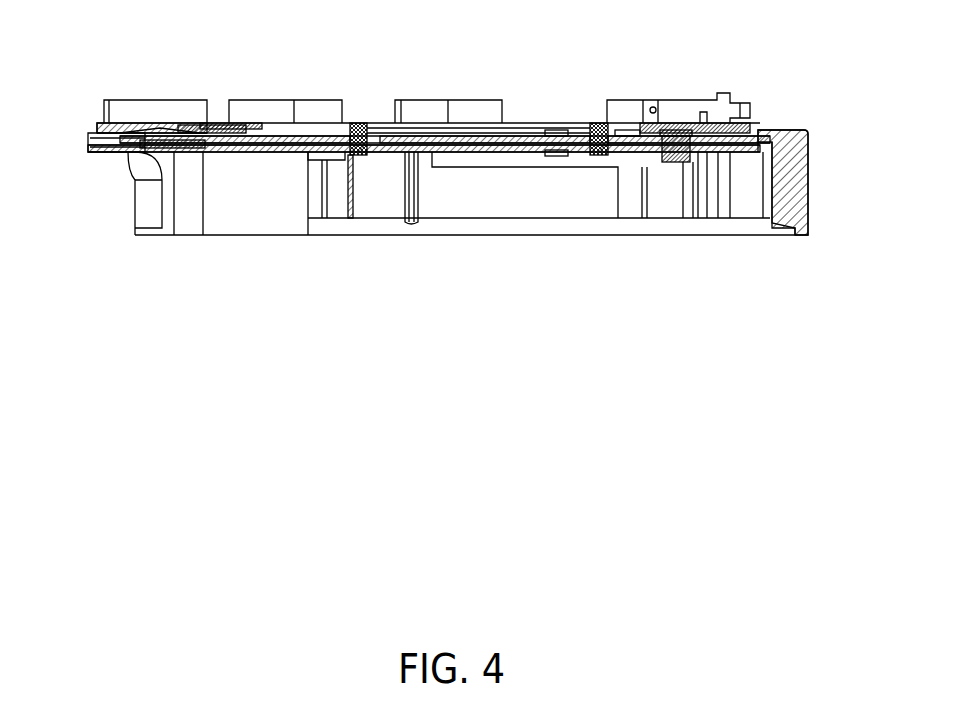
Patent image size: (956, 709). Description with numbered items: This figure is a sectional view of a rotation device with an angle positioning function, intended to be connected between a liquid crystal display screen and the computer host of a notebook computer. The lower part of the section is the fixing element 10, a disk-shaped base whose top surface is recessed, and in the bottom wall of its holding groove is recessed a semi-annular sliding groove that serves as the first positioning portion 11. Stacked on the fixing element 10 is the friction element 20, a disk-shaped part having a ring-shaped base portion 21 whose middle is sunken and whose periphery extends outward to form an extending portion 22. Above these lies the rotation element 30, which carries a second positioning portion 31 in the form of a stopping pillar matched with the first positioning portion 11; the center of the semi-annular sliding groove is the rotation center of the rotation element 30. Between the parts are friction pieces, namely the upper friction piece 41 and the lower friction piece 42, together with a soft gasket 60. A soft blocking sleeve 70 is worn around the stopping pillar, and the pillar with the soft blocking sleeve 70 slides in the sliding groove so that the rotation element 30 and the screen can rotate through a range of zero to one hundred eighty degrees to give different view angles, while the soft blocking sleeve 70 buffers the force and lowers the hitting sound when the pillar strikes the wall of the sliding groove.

The fixing element 10 is at (805, 148).
The first positioning portion 11 is at (678, 162).
The friction element 20 is at (647, 125).
The base portion 21 is at (307, 130).
The extending portion 22 is at (213, 127).
The rotation element 30 is at (107, 124).
The second positioning portion 31 is at (675, 130).
The upper friction piece 41 is at (192, 125).
The lower friction piece 42 is at (140, 138).
The soft gasket 60 is at (132, 150).
The soft blocking sleeve 70 is at (690, 162).